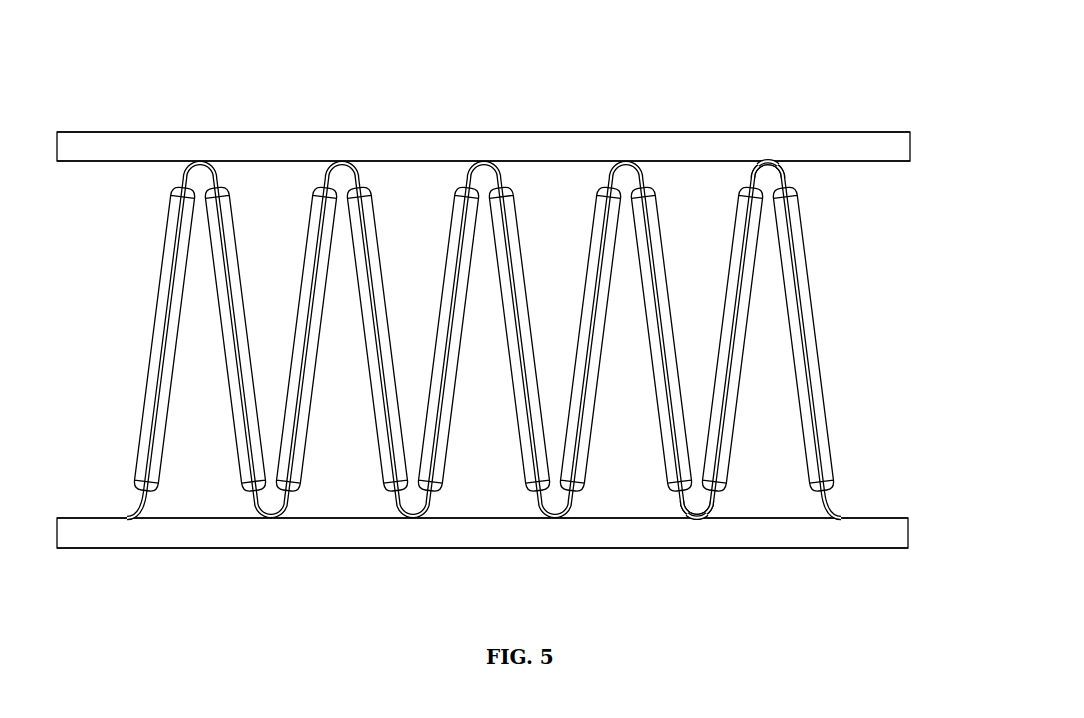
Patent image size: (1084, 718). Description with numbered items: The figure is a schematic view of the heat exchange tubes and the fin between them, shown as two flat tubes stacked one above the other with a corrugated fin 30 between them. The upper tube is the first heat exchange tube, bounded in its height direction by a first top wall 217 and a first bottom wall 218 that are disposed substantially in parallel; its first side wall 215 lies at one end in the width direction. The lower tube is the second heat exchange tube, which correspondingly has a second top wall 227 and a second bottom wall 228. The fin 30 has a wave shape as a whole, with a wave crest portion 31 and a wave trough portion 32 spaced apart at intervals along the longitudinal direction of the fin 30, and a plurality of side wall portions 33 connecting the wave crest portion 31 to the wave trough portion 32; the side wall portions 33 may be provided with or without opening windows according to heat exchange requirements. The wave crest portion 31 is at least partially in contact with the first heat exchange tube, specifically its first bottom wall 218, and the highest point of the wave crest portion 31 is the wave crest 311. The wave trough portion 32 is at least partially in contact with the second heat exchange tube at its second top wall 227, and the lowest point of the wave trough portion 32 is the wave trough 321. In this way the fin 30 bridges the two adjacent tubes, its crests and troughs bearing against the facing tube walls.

The first side wall 215 is at (536, 147).
The first top wall 217 is at (402, 132).
The first bottom wall 218 is at (118, 161).
The second top wall 227 is at (92, 518).
The second bottom wall 228 is at (153, 548).
The fin 30 is at (815, 328).
The wave crest portion 31 is at (784, 172).
The wave crest 311 is at (769, 161).
The wave trough portion 32 is at (705, 520).
The wave trough 321 is at (698, 519).
The side wall portion 33 is at (807, 264).